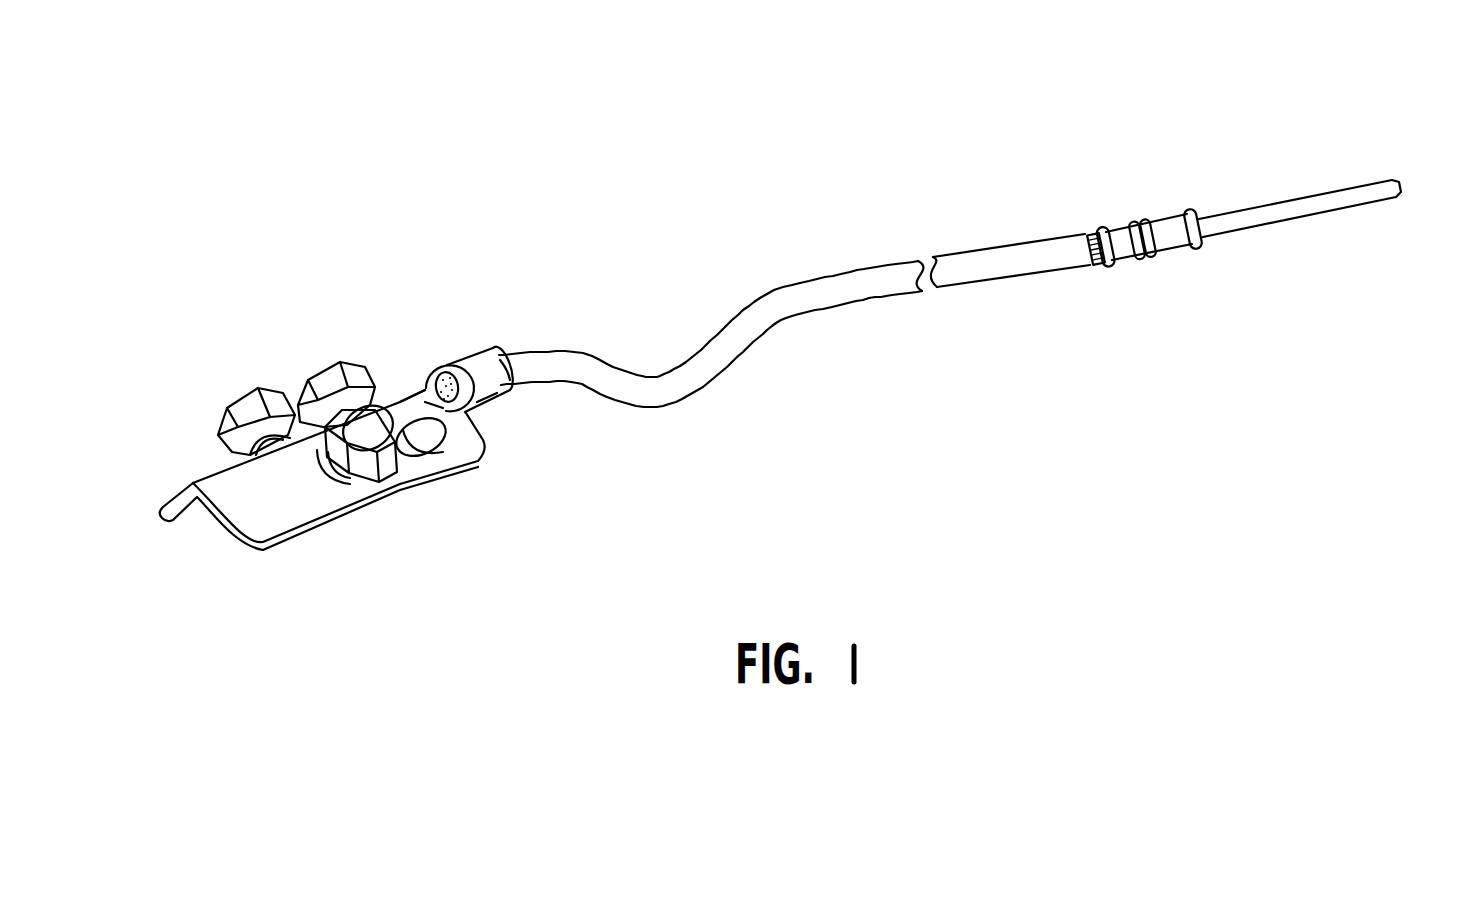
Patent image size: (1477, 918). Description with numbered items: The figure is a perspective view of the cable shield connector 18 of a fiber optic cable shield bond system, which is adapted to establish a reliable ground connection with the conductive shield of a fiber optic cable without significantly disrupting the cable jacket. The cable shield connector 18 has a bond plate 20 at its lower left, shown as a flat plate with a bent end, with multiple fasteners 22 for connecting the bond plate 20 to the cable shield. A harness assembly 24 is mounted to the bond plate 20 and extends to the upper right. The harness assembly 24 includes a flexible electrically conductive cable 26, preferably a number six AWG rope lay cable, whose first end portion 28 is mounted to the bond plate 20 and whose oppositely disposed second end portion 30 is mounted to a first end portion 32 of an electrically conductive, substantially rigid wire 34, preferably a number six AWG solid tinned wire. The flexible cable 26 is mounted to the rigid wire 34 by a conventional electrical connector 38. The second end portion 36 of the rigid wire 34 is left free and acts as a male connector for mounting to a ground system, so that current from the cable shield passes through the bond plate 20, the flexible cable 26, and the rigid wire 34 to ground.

The cable shield connector 18 is at (358, 112).
The bond plate 20 is at (280, 547).
The fasteners 22 is at (352, 362).
The harness assembly 24 is at (977, 165).
The flexible electrically conductive cable 26 is at (770, 330).
The first end portion 28 is at (517, 385).
The second end portion 30 is at (1090, 267).
The first end portion 32 is at (1207, 240).
The rigid wire 34 is at (1307, 203).
The second end portion 36 is at (1393, 197).
The electrical connector 38 is at (1170, 212).